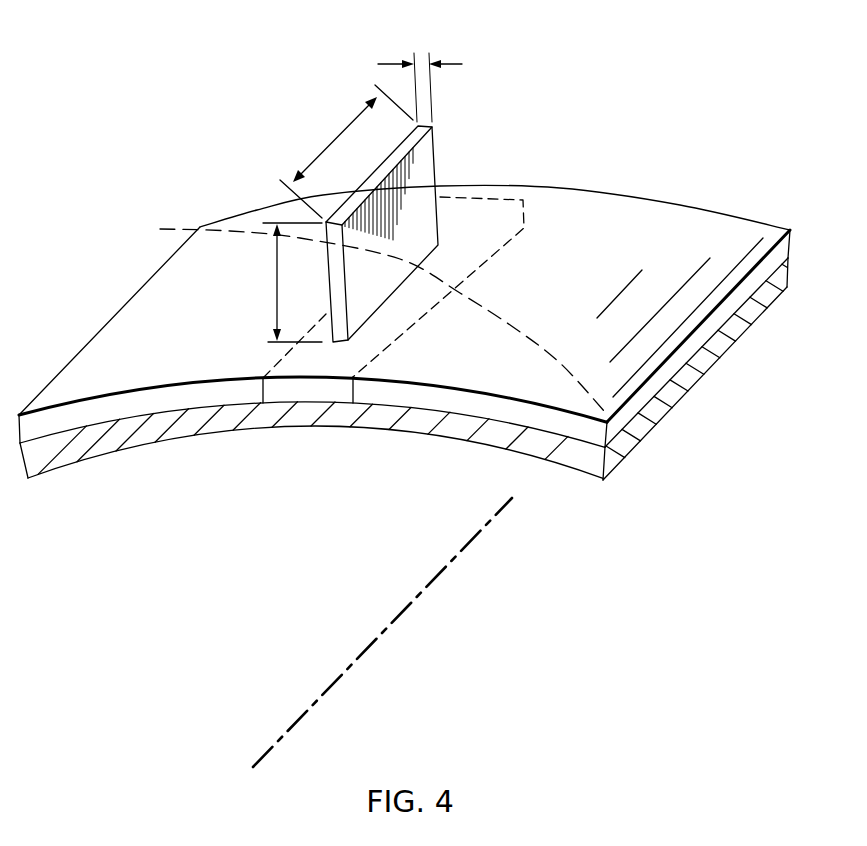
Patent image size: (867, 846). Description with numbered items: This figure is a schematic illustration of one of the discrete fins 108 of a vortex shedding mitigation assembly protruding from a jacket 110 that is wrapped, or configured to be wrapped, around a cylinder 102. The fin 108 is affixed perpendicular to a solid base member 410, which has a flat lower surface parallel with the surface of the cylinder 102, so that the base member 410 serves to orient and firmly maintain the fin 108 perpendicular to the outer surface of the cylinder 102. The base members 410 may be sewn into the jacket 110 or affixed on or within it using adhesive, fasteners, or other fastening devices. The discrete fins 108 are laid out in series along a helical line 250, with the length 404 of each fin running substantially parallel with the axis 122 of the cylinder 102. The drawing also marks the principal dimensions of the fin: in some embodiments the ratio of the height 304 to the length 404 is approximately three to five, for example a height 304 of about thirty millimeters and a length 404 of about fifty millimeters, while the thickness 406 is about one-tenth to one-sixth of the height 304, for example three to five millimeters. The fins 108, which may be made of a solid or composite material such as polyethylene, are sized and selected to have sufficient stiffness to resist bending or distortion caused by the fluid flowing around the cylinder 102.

The cylinder 102 is at (190, 433).
The discrete fin 108 is at (428, 163).
The jacket 110 is at (108, 318).
The axis 122 is at (357, 655).
The helical line 250 is at (517, 329).
The height 304 is at (277, 283).
The length 404 is at (332, 138).
The thickness 406 is at (460, 63).
The solid base member 410 is at (277, 388).